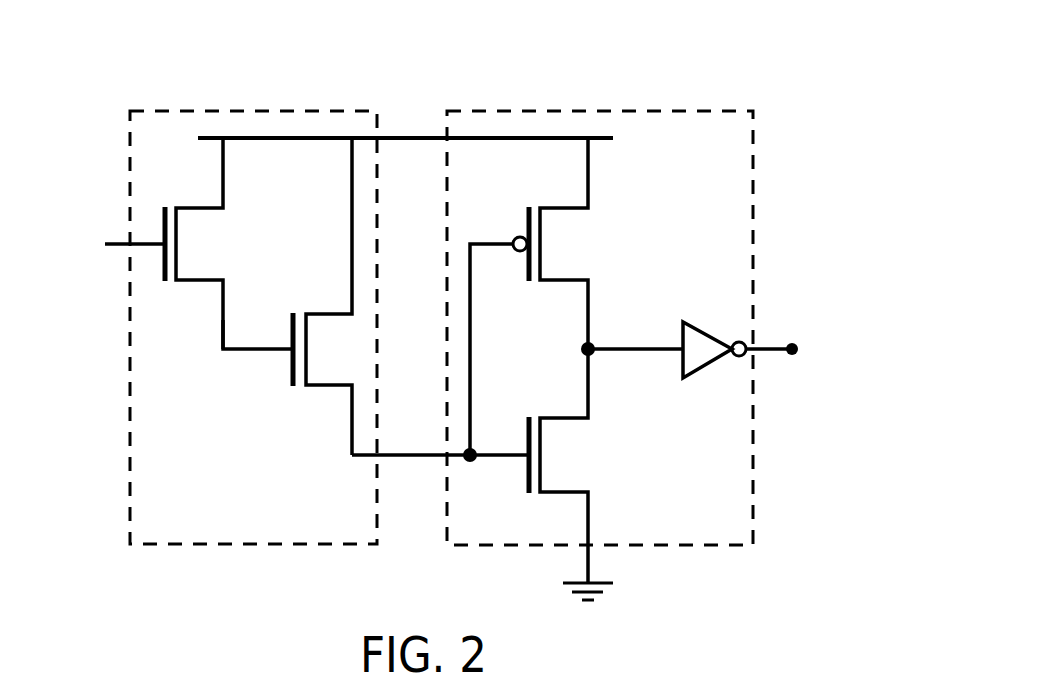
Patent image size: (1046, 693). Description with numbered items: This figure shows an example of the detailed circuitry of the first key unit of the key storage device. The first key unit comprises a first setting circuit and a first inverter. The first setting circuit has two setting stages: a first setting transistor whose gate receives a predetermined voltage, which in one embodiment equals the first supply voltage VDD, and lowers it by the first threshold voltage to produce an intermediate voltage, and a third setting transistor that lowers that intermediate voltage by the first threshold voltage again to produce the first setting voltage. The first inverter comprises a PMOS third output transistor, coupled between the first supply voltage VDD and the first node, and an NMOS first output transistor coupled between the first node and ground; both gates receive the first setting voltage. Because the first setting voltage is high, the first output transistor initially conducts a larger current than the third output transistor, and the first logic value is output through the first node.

The first supply voltage VDD is at (438, 137).